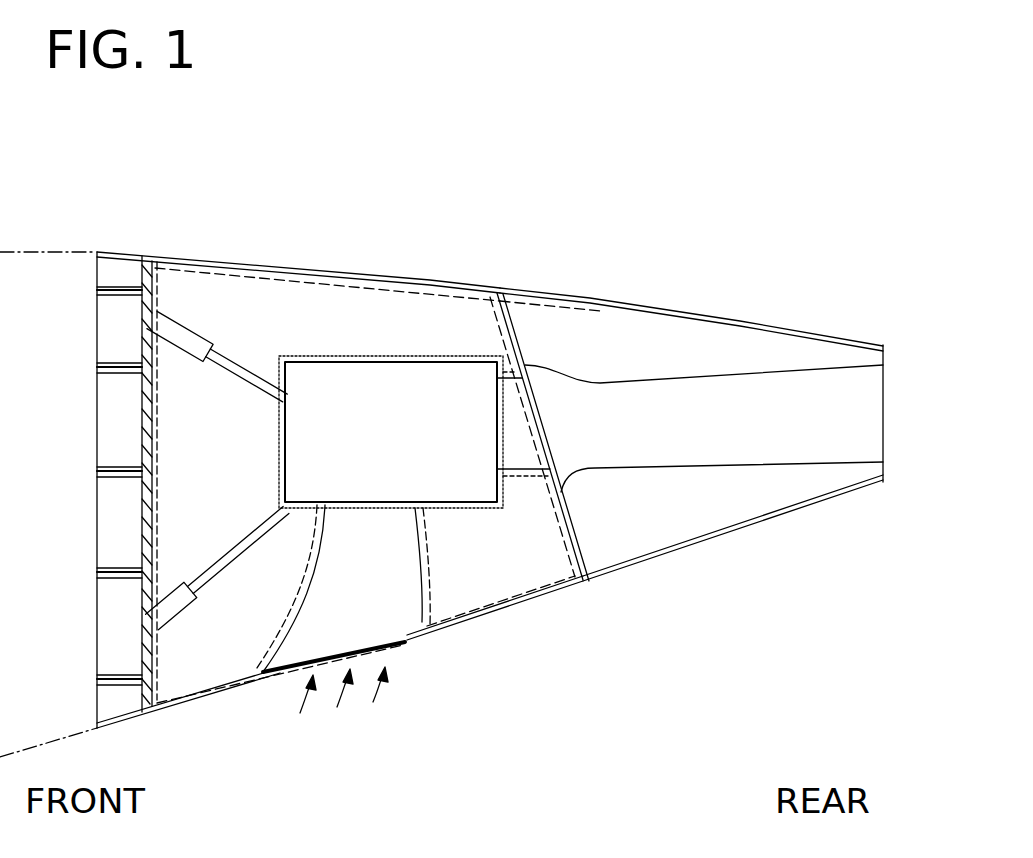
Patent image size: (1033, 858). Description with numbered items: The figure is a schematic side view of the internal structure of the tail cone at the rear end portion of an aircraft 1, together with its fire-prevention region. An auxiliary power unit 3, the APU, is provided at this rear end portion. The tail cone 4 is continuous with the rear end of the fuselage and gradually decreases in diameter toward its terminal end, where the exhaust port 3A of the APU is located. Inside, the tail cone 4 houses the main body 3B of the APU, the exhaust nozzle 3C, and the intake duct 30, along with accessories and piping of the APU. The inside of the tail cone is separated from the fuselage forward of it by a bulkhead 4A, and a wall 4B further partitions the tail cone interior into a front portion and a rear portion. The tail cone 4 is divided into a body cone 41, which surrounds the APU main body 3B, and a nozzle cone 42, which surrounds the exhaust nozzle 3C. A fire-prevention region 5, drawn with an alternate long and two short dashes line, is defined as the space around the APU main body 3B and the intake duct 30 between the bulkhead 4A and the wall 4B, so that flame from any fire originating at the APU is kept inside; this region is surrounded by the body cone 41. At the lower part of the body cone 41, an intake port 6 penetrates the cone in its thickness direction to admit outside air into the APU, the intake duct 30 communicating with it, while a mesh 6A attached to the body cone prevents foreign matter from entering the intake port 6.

The aircraft 1 is at (87, 244).
The auxiliary power unit 3 is at (342, 356).
The exhaust port 3A is at (867, 368).
The main body 3B is at (450, 353).
The exhaust nozzle 3C is at (742, 372).
The tail cone 4 is at (550, 141).
The body cone 41 is at (403, 276).
The nozzle cone 42 is at (570, 291).
The bulkhead 4A is at (142, 425).
The wall 4B is at (572, 558).
The fire-prevention region 5 is at (227, 473).
The intake port 6 is at (400, 646).
The mesh 6A is at (372, 655).
The intake duct 30 is at (305, 568).